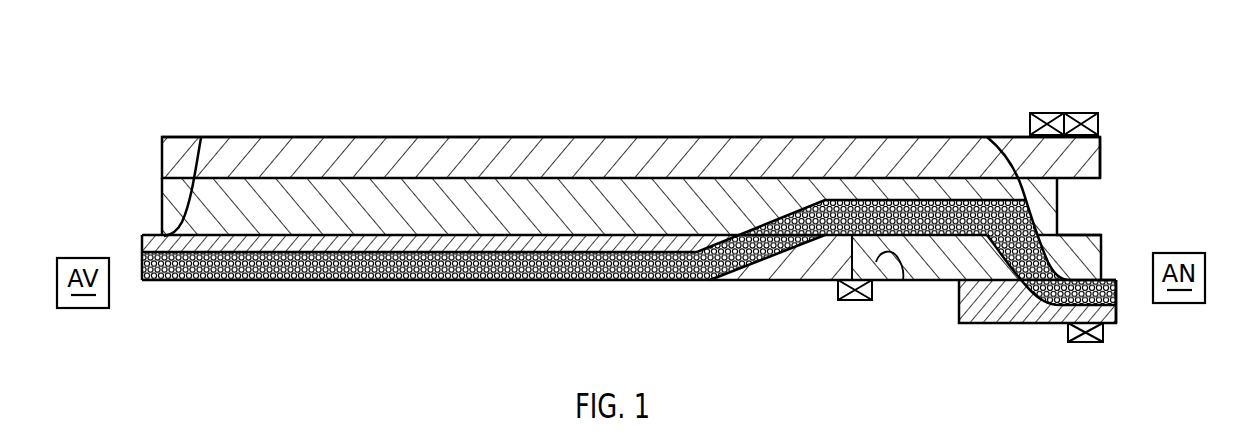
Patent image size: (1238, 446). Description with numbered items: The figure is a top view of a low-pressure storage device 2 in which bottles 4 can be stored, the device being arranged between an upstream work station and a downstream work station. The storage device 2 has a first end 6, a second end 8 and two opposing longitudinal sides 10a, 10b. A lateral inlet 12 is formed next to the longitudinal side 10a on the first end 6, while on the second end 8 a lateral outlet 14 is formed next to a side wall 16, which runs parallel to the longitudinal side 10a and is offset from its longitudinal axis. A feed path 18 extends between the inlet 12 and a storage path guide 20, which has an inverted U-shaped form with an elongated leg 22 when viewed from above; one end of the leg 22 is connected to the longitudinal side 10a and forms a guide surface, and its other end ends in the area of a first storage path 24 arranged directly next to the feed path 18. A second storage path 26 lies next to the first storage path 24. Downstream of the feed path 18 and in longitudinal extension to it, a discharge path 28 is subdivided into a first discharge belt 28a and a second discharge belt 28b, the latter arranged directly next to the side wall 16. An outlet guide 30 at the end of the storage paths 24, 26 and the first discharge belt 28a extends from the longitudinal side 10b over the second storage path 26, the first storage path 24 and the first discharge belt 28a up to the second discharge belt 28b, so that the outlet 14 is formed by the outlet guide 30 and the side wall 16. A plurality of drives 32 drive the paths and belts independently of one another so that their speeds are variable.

The low-pressure storage device 2 is at (635, 243).
The bottles 4 is at (212, 283).
The first end 6 is at (150, 138).
The second end 8 is at (1116, 140).
The longitudinal side 10a is at (438, 283).
The longitudinal side 10b is at (384, 137).
The lateral inlet 12 is at (133, 282).
The lateral outlet 14 is at (1124, 325).
The side wall 16 is at (1015, 320).
The feed path 18 is at (348, 243).
The storage path guide 20 is at (903, 281).
The leg 22 is at (763, 265).
The first storage path 24 is at (683, 223).
The second storage path 26 is at (567, 165).
The discharge path 28 is at (976, 333).
The first discharge belt 28a is at (945, 263).
The second discharge belt 28b is at (1058, 310).
The outlet guide 30 is at (1012, 133).
The drives 32 is at (1035, 112).